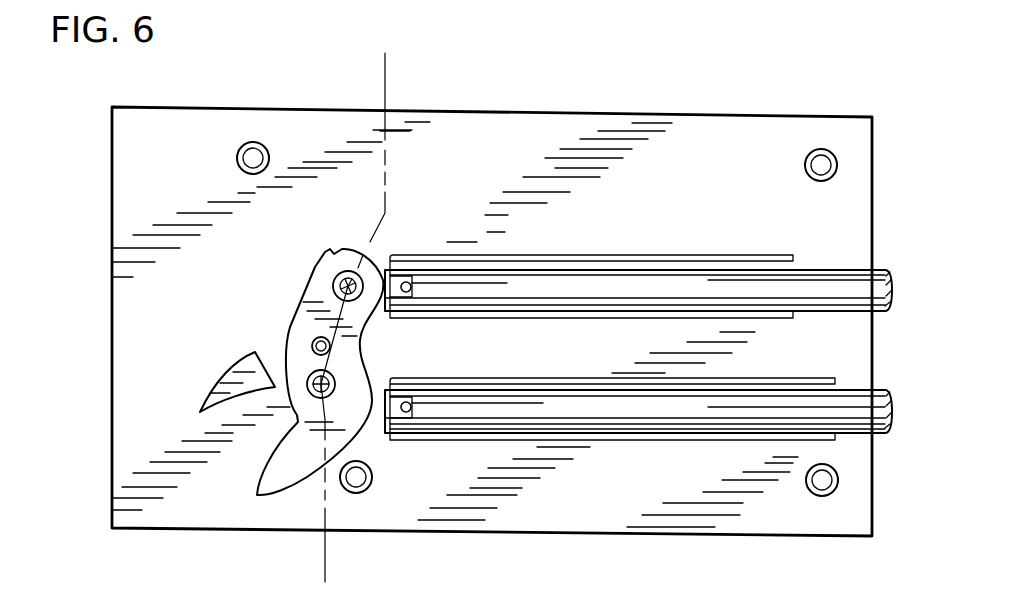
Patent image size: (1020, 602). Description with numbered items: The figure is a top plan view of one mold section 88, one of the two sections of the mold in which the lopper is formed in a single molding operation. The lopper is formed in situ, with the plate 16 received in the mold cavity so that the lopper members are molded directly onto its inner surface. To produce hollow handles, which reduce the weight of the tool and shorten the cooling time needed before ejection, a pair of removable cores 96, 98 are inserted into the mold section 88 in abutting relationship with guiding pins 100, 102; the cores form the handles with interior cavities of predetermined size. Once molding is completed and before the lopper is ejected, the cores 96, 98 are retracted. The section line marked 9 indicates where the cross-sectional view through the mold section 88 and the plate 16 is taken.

The mold section 88 is at (150, 173).
The plate 16 is at (300, 330).
The removable core 96 is at (858, 295).
The removable core 98 is at (855, 420).
The guiding pin 100 is at (407, 281).
The guiding pin 102 is at (408, 413).
The section line 9- 9 is at (442, 66).